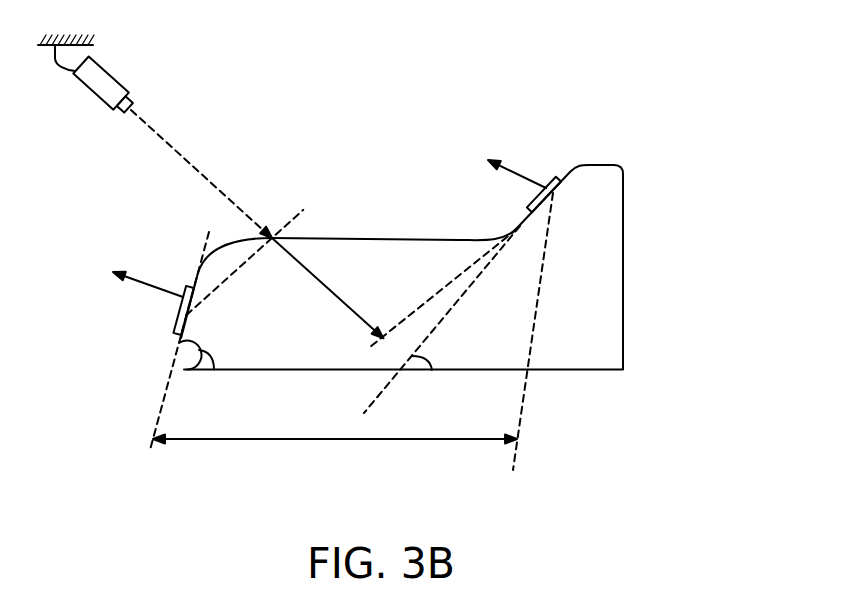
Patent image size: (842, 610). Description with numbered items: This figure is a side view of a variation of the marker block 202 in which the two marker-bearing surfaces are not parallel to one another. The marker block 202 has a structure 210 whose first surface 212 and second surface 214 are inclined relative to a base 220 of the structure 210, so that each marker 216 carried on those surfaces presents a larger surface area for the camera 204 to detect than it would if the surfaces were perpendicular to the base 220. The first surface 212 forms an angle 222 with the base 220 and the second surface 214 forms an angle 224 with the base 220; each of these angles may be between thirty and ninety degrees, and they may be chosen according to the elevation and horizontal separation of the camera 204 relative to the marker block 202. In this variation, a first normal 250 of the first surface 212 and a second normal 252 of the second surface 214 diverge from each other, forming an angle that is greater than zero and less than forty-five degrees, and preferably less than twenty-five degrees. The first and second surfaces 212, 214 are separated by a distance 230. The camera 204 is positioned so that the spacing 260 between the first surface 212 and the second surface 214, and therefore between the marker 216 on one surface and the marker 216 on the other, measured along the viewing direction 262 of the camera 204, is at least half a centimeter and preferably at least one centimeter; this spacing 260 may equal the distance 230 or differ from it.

The marker block 202 is at (655, 95).
The camera 204 is at (92, 91).
The structure 210 is at (623, 268).
The first surface 212 is at (177, 341).
The second surface 214 is at (570, 172).
The marker 216 is at (175, 330).
The base 220 is at (594, 370).
The angle 222 is at (214, 370).
The angle 224 is at (432, 370).
The distance 230 is at (348, 440).
The first normal 250 is at (158, 282).
The second normal 252 is at (511, 180).
The spacing 260 is at (305, 263).
The viewing direction 262 is at (205, 177).